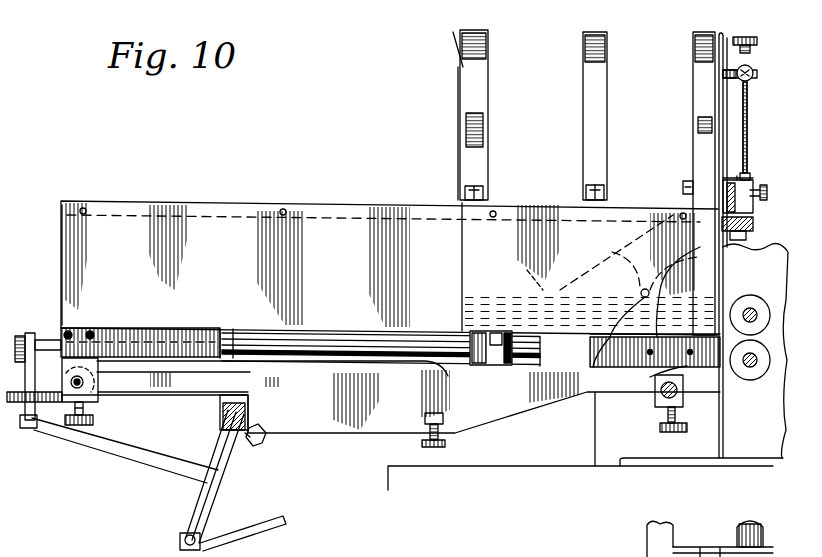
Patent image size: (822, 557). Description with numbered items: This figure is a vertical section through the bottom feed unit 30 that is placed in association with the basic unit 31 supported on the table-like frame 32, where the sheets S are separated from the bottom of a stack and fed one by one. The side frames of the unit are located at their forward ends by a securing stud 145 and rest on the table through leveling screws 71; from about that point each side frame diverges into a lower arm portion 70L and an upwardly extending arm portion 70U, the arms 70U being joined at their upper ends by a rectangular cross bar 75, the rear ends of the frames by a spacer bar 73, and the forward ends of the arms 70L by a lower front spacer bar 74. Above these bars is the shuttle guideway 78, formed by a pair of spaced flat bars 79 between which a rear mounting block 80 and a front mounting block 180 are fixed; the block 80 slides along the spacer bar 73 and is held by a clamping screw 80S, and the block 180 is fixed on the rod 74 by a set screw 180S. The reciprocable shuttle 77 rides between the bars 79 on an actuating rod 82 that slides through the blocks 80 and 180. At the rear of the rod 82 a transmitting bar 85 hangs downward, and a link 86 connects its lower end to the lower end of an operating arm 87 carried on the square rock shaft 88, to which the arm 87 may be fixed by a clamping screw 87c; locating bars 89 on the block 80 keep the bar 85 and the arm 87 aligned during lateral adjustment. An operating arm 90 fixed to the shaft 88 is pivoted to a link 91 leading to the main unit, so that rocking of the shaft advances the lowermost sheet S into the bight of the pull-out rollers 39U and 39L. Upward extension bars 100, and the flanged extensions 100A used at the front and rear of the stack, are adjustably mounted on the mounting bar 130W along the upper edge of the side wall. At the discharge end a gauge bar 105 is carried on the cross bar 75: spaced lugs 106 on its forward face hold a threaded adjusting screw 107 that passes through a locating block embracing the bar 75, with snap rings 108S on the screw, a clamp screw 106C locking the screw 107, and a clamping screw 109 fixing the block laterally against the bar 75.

The bottom feed unit 30 is at (305, 190).
The basic unit 31 is at (716, 470).
The frame 32 is at (470, 466).
The upper pull-out roller 39U is at (757, 292).
The lower pull-out roller 39L is at (753, 380).
The upwardly diverging arm portion 70U is at (700, 207).
The lower arm portion 70L is at (628, 384).
The leveling screws 71 is at (421, 447).
The rear spacer bar 73 is at (84, 382).
The lower front spacer bar 74 is at (662, 408).
The cross bar 75 is at (732, 178).
The reciprocable shuttle 77 is at (492, 353).
The shuttle guide 78 is at (220, 320).
The spaced flat bars 79 is at (152, 337).
The mounting block 80 is at (83, 363).
The clamping screw 80S is at (88, 424).
The actuating rod 82 is at (50, 340).
The transmitting bar 85 is at (32, 333).
The link 86 is at (117, 445).
The operating arm 87 is at (238, 463).
The clamping screw 87c is at (263, 443).
The rock shaft 88 is at (262, 413).
The locating bars 89 is at (140, 402).
The operating arm 90 is at (197, 503).
The link 91 is at (245, 524).
The upward extension bars 100 is at (589, 107).
The extensions 100A is at (476, 95).
The gauge bar 105 is at (722, 100).
The lugs 106 is at (735, 36).
The clamp screw 106C is at (751, 64).
The threaded adjusting screw 107 is at (748, 112).
The snap rings 108S is at (740, 177).
The clamping screw 109 is at (767, 186).
The mounting bar 130W is at (312, 224).
The securing stud 145 is at (612, 252).
The mounting block 180 is at (698, 378).
The securing set screw 180S is at (667, 428).
The sheets S is at (533, 330).